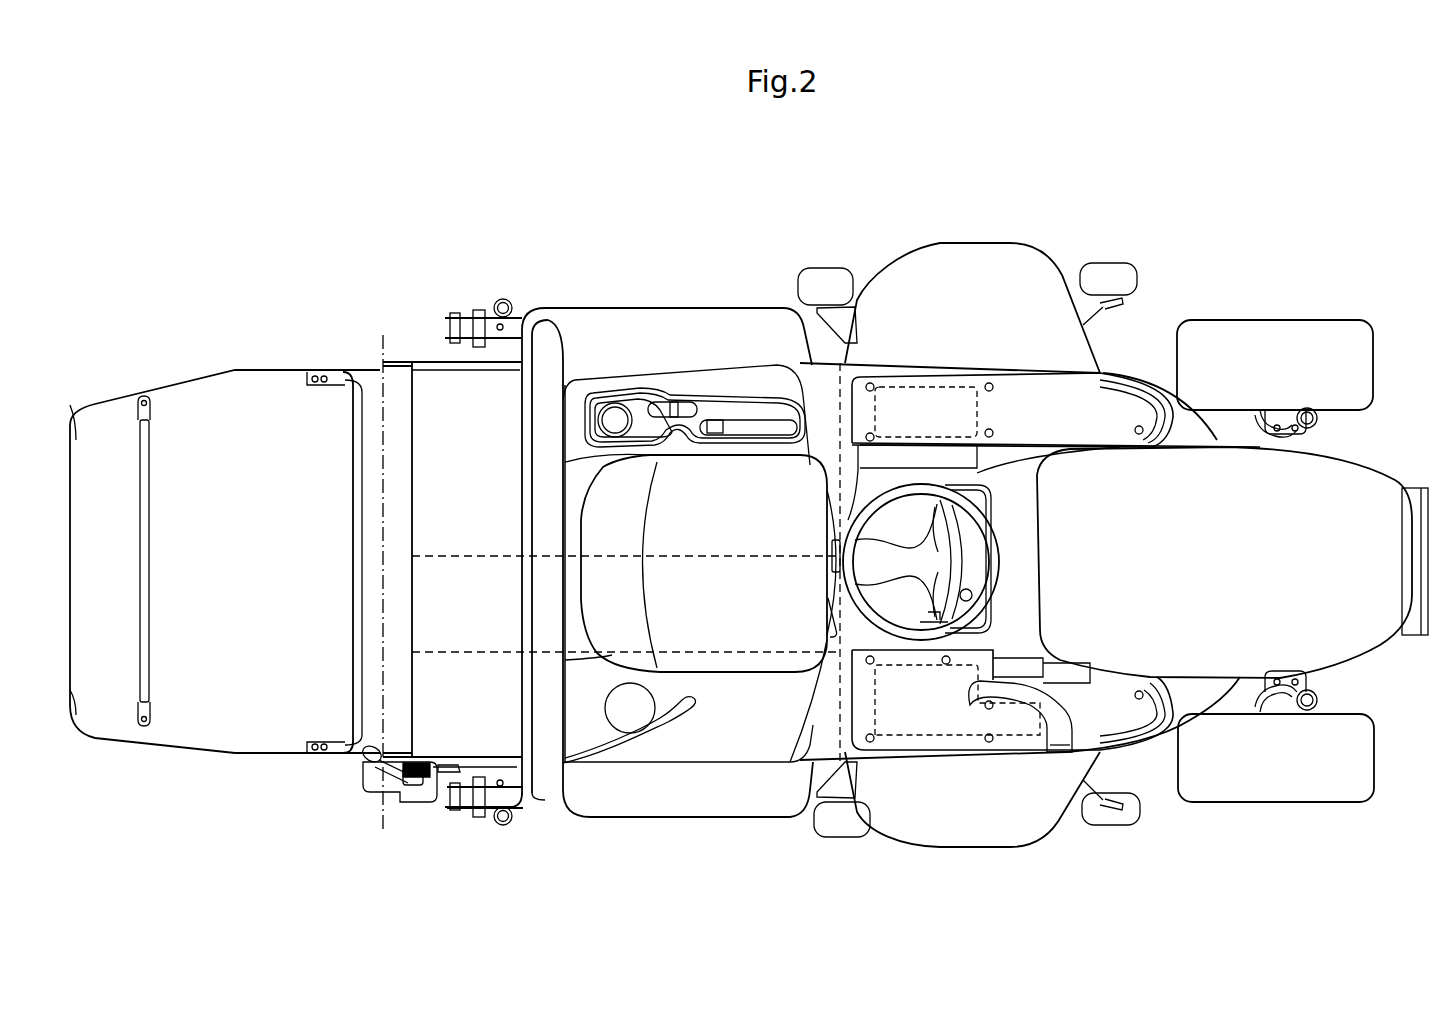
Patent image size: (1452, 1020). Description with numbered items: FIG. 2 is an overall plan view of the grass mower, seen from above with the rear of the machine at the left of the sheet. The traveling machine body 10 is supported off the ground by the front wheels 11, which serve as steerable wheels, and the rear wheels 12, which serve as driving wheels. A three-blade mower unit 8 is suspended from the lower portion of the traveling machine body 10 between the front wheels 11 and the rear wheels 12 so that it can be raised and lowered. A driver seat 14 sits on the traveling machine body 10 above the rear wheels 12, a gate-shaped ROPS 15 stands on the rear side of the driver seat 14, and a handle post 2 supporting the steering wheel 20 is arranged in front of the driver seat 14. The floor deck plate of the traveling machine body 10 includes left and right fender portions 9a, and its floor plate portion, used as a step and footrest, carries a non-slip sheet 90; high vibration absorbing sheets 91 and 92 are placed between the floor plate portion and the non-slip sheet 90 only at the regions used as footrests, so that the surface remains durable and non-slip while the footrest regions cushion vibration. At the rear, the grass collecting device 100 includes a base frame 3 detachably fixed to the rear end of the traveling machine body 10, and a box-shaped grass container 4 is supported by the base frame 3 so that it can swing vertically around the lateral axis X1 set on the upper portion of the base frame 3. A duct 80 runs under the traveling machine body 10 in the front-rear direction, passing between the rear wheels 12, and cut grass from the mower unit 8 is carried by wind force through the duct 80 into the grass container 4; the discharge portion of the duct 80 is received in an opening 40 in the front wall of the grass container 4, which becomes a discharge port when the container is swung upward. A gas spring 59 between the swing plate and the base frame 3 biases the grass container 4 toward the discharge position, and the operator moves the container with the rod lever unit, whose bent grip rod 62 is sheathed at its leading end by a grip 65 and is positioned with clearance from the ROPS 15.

The grass collecting device 100 is at (292, 262).
The handle post 2 is at (978, 555).
The base frame 3 is at (440, 365).
The grass container 4 is at (180, 377).
The mower unit 8 is at (980, 240).
The fender portion 9a is at (720, 378).
The traveling machine body 10 is at (1412, 487).
The front wheel 11 is at (1283, 338).
The rear wheel 12 is at (608, 333).
The driver seat 14 is at (737, 633).
The ROPS 15 is at (530, 507).
The steering wheel 20 is at (990, 566).
The opening 40 is at (416, 606).
The gas spring 59 is at (463, 768).
The grip rod 62 is at (420, 785).
The grip 65 is at (362, 758).
The duct 80 is at (472, 653).
The non-slip sheet 90 is at (1010, 403).
The high vibration absorbing sheet 91 is at (925, 738).
The high vibration absorbing sheet 92 is at (922, 388).
The lateral axis X1 is at (383, 597).